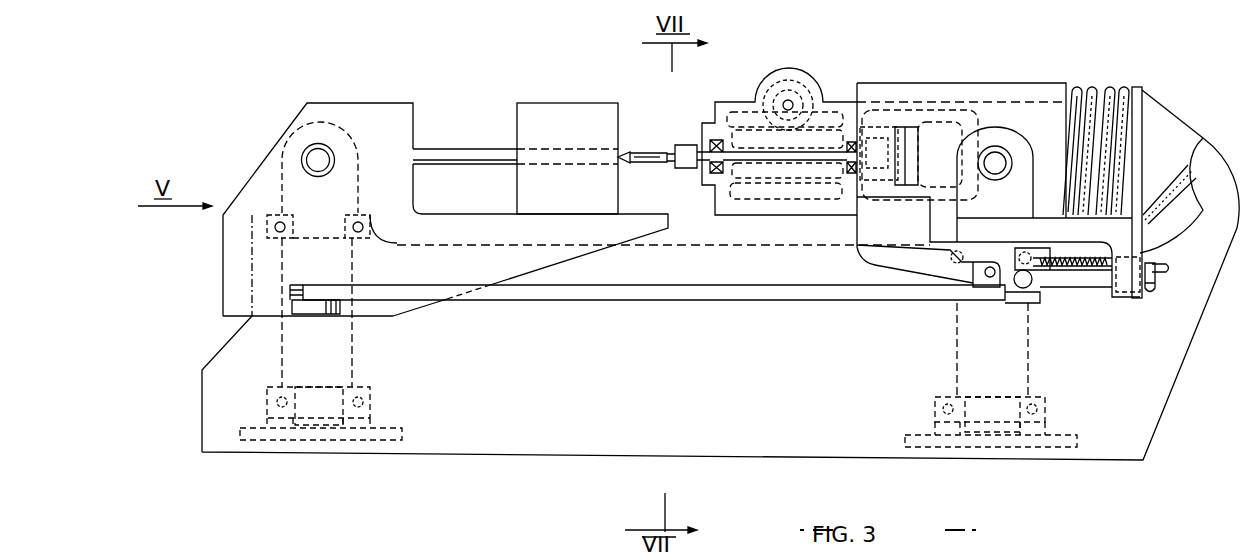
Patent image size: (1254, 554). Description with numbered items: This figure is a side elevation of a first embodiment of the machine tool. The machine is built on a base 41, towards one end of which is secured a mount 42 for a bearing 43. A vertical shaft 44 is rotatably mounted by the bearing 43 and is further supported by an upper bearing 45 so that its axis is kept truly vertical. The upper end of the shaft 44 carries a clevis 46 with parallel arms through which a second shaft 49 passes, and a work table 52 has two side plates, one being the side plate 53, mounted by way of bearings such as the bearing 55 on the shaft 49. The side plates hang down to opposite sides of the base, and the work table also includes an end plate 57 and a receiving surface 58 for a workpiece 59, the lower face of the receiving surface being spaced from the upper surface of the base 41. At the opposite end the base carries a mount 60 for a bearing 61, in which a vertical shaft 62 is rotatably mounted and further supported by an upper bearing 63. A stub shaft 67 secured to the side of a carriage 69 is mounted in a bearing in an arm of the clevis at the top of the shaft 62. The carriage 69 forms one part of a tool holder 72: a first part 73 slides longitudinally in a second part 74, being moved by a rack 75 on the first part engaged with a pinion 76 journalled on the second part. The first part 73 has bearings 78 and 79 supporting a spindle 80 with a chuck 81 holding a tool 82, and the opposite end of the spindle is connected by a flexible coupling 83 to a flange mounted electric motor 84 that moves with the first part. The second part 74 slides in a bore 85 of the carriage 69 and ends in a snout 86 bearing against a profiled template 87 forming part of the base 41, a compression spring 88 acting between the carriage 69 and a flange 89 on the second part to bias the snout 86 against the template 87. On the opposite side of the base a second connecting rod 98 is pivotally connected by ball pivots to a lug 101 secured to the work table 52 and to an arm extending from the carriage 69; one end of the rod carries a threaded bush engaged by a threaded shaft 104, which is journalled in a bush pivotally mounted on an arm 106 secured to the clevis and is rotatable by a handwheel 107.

The base 41 is at (528, 440).
The mount 42 is at (285, 432).
The bearing 43 is at (280, 400).
The vertical shaft 44 is at (325, 405).
The upper bearing 45 is at (267, 220).
The clevis 46 is at (348, 152).
The second shaft 49 is at (316, 155).
The work table 52 is at (233, 192).
The side plate 53 is at (398, 188).
The bearing 55 is at (342, 150).
The end plate 57 is at (222, 292).
The receiving surface 58 is at (498, 232).
The workpiece 59 is at (563, 120).
The mount 60 is at (952, 447).
The bearing 61 is at (1037, 400).
The vertical shaft 62 is at (1007, 408).
The upper bearing 63 is at (953, 262).
The stub shaft 67 is at (996, 158).
The carriage 69 is at (913, 96).
The tool holder 72 is at (893, 76).
The first part 73 is at (722, 130).
The second part 74 is at (762, 205).
The rack 75 is at (818, 122).
The pinion 76 is at (793, 102).
The bearing 78 is at (703, 123).
The bearing 79 is at (852, 177).
The spindle 80 is at (818, 160).
The chuck 81 is at (671, 148).
The tool 82 is at (645, 160).
The flexible coupling 83 is at (872, 162).
The electric motor 84 is at (943, 133).
The bore 85 is at (992, 105).
The snout 86 is at (1180, 205).
The profiled template 87 is at (1197, 150).
The compression spring 88 is at (1087, 90).
The flange 89 is at (1138, 87).
The second connecting rod 98 is at (682, 293).
The lug 101 is at (310, 310).
The threaded shaft 104 is at (1087, 278).
The arm 106 is at (1165, 253).
The handwheel 107 is at (1157, 284).